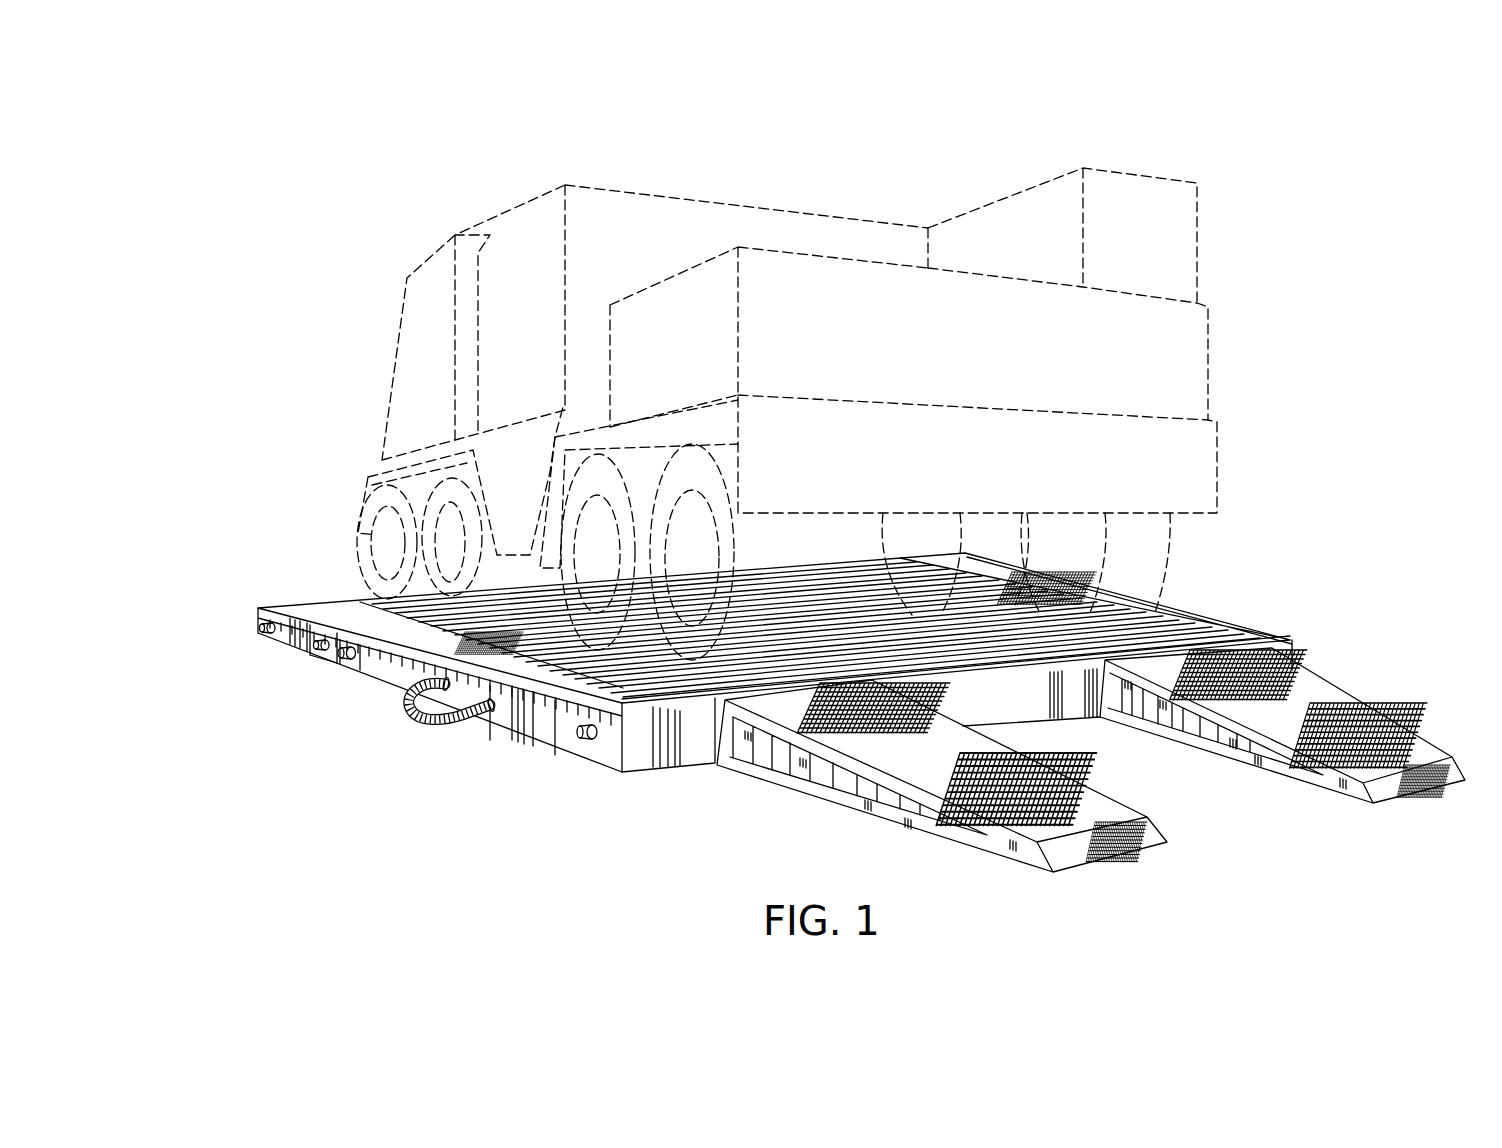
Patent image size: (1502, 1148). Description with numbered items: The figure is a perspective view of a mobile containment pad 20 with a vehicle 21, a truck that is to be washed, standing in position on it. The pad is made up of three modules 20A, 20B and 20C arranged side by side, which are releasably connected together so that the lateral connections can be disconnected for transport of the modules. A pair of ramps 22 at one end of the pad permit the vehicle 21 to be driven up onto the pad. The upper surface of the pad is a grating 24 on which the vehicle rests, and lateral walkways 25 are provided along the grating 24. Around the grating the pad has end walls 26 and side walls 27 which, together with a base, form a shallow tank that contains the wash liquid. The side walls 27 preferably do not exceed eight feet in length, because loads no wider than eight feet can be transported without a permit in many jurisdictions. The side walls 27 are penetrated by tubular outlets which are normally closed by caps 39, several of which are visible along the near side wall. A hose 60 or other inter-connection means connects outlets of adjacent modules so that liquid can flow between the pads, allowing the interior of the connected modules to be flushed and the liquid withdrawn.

The mobile containment pad 20 is at (612, 750).
The module 20A is at (503, 715).
The module 20B is at (375, 662).
The module 20C is at (280, 632).
The vehicle 21 is at (803, 230).
The ramps 22 is at (1117, 810).
The grating 24 is at (1007, 607).
The lateral walkways 25 is at (676, 700).
The end walls 26 is at (1090, 703).
The side walls 27 is at (557, 732).
The caps 39 is at (583, 737).
The hose 60 is at (423, 718).